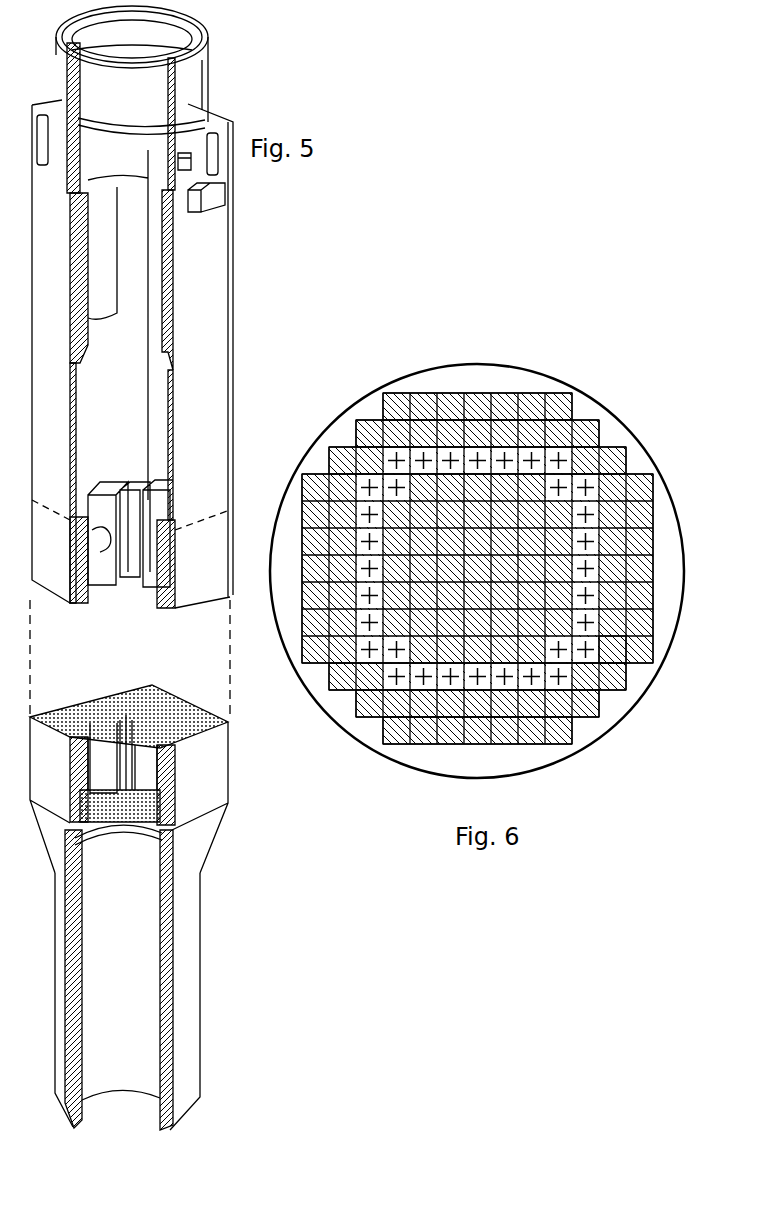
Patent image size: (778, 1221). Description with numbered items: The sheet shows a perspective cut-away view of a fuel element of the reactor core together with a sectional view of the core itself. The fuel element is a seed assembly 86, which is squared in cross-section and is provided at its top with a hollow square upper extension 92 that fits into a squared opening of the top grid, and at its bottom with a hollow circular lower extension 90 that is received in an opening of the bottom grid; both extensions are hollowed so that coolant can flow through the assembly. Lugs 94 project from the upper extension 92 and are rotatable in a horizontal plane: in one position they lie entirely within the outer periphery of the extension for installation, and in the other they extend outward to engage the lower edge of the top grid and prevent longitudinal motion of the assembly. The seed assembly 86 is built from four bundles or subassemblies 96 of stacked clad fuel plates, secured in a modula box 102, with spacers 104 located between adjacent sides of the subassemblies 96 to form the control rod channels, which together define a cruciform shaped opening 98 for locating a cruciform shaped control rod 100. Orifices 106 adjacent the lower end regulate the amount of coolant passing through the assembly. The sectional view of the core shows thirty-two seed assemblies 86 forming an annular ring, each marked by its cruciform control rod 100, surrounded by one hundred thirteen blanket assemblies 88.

In FIG. 5, the seed assembly 86 is at (215, 413).
In FIG. 6, the seed assembly 86 is at (602, 662).
In FIG. 6, the blanket assembly 88 is at (477, 599).
In FIG. 5, the circular lower extension 90 is at (188, 1018).
In FIG. 5, the square upper extension 92 is at (215, 367).
In FIG. 5, the lug 94 is at (200, 208).
In FIG. 5, the subassembly 96 is at (100, 733).
In FIG. 5, the cruciform shaped opening 98 is at (135, 693).
In FIG. 6, the cruciform shaped control rod 100 is at (478, 682).
In FIG. 5, the modula box 102 is at (220, 768).
In FIG. 5, the spacer 104 is at (185, 710).
In FIG. 5, the orifice 106 is at (172, 837).